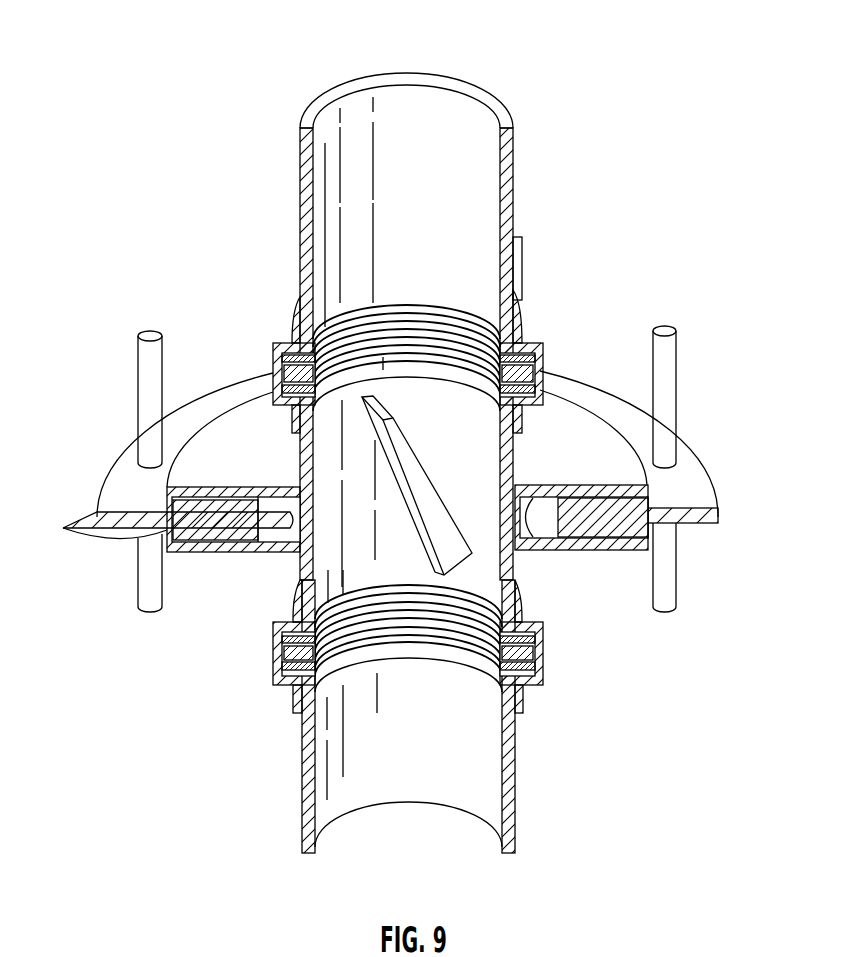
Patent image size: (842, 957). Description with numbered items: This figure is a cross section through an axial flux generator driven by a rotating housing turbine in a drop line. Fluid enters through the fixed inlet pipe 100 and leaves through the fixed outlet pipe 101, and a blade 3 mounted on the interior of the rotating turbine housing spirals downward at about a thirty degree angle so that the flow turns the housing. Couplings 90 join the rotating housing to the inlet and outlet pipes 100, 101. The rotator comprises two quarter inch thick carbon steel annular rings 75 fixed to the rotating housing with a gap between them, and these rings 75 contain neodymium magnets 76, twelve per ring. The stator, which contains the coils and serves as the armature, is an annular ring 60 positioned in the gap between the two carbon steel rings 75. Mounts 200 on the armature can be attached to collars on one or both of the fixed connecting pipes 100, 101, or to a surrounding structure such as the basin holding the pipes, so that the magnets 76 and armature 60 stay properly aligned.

The inlet pipe 100 is at (513, 183).
The outlet pipe 101 is at (518, 752).
The flanged bellows coupling 90 is at (543, 370).
The carbon steel annular ring 75 is at (577, 430).
The stator annular ring 60 is at (700, 473).
The neodymium magnet 76 is at (64, 528).
The mount 200 is at (137, 388).
The blade 3 is at (422, 515).